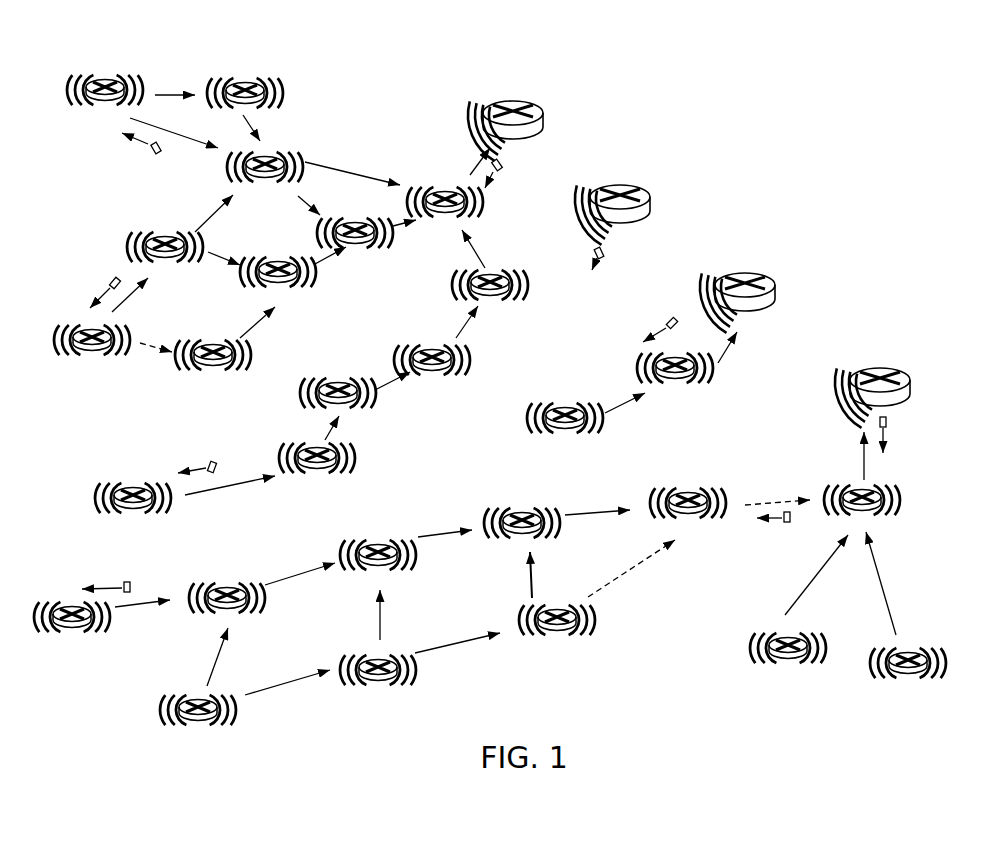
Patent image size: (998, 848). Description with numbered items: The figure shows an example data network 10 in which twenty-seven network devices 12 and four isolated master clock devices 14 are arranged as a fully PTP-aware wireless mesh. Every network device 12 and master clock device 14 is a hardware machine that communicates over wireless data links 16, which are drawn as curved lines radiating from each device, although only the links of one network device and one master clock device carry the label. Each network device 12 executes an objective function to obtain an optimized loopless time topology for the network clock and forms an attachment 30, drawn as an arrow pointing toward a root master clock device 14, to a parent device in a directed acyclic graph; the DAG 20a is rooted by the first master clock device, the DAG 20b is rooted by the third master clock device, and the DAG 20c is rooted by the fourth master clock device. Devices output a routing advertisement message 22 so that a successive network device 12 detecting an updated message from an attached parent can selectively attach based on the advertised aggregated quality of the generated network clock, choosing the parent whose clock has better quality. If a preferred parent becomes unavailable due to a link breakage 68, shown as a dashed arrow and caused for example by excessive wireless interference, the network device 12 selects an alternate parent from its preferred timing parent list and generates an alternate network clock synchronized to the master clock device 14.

The data network 10 is at (650, 88).
The network device 12 is at (350, 224).
The master clock device 14 is at (543, 113).
The wireless data link 16 is at (470, 130).
The routing advertisement message 22 is at (151, 156).
The attachment 30 is at (625, 408).
The DAG rooted by master clock device GM1 20a is at (522, 332).
The DAG rooted by master clock device GM3 20b is at (735, 357).
The DAG rooted by master clock device GM4 20c is at (600, 500).
The link breakage 68 is at (630, 572).